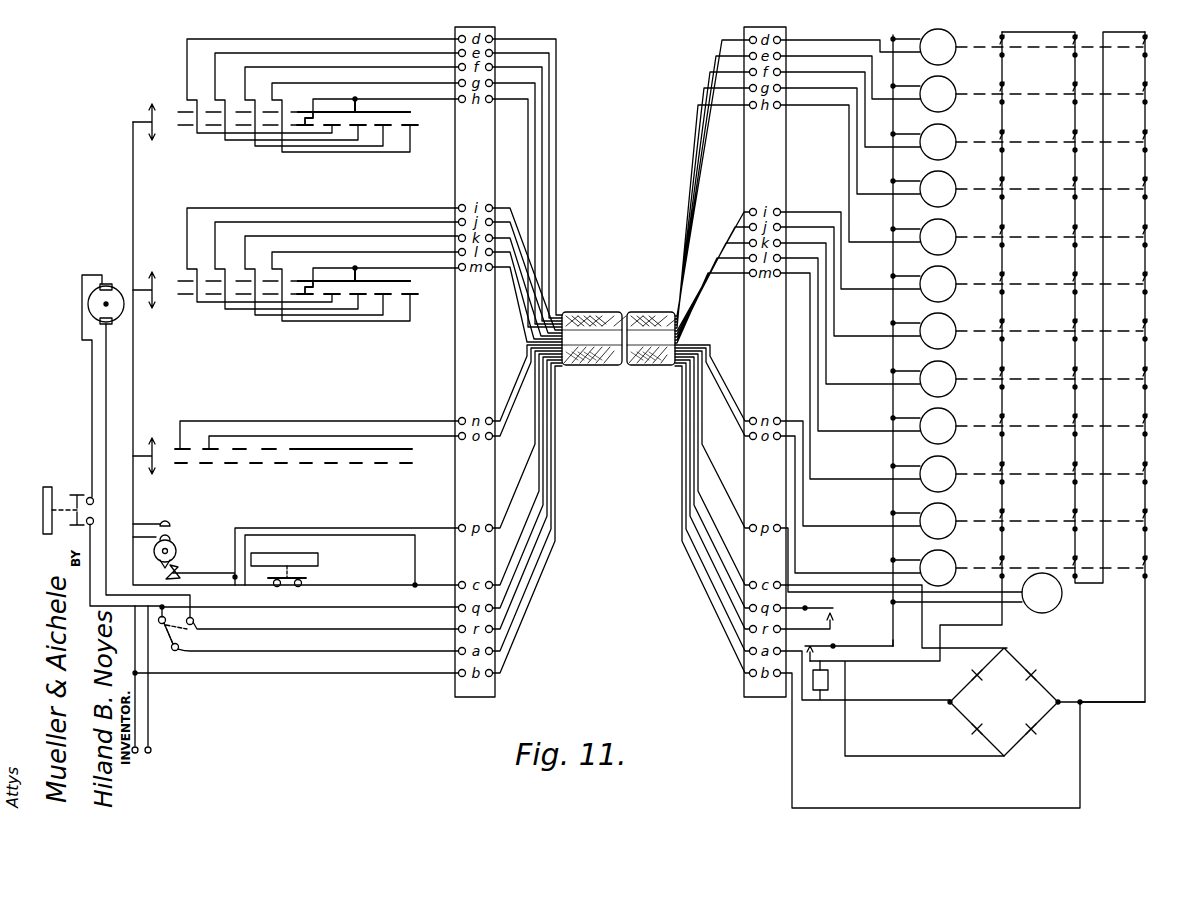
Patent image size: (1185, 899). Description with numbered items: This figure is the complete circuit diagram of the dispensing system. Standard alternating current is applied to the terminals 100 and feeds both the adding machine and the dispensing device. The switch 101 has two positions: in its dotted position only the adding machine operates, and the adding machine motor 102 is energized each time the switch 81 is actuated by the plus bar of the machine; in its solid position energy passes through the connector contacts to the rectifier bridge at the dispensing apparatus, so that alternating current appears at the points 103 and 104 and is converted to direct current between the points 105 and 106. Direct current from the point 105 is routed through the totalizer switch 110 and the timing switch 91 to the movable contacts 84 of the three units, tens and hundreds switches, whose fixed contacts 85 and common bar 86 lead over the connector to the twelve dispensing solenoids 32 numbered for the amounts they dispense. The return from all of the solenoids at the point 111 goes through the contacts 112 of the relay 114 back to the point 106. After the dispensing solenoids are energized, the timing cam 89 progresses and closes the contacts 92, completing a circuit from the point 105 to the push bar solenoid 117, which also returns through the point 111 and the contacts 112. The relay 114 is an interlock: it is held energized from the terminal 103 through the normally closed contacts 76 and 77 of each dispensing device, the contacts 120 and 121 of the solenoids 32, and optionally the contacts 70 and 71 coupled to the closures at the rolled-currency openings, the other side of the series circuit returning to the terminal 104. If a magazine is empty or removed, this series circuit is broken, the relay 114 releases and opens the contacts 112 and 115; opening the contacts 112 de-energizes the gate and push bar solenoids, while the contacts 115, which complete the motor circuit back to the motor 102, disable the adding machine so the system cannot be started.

The solenoids 32 is at (952, 60).
The closure contact 70 is at (1144, 54).
The closure contact 71 is at (1146, 36).
The dispensing device contact 76 is at (1000, 102).
The dispensing device contact 77 is at (1005, 90).
The switch 81 is at (43, 490).
The movable contacts 84 is at (146, 120).
The switch contacts 85 is at (183, 127).
The common bus bar 86 is at (410, 112).
The timing cam 89 is at (176, 547).
The timing switch 91 is at (172, 526).
The switch contacts 92 is at (180, 570).
The terminals 100 is at (133, 757).
The switch 101 is at (180, 650).
The adding machine motor 102 is at (112, 284).
The alternating current point 103 is at (950, 704).
The alternating current point 104 is at (1060, 705).
The direct current point 105 is at (1010, 649).
The direct current point 106 is at (1005, 758).
The totalizer switch 110 is at (306, 578).
The return point 111 is at (897, 647).
The relay contacts 112 is at (815, 648).
The relay 114 is at (818, 692).
The relay contacts 115 is at (832, 610).
The relay 117 is at (1058, 604).
The solenoid contacts 120 is at (1077, 94).
The solenoid contacts 121 is at (1072, 102).